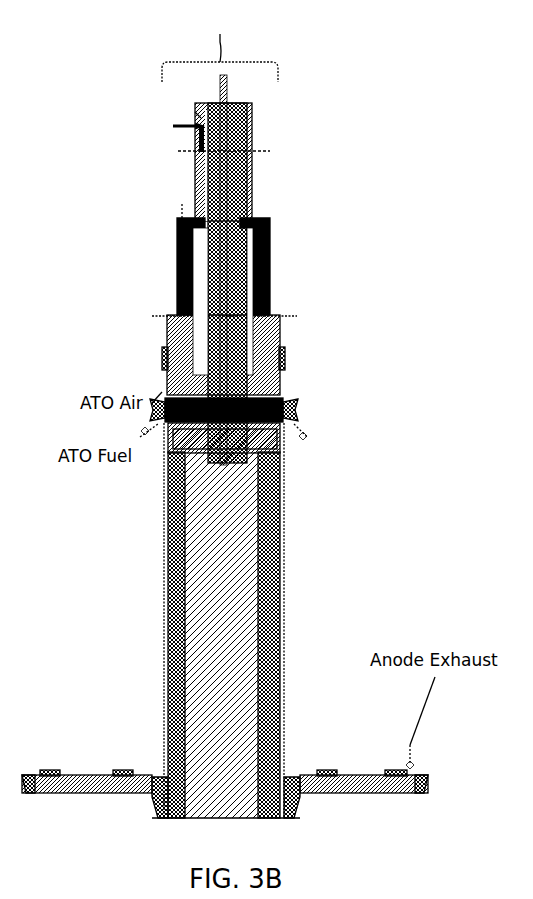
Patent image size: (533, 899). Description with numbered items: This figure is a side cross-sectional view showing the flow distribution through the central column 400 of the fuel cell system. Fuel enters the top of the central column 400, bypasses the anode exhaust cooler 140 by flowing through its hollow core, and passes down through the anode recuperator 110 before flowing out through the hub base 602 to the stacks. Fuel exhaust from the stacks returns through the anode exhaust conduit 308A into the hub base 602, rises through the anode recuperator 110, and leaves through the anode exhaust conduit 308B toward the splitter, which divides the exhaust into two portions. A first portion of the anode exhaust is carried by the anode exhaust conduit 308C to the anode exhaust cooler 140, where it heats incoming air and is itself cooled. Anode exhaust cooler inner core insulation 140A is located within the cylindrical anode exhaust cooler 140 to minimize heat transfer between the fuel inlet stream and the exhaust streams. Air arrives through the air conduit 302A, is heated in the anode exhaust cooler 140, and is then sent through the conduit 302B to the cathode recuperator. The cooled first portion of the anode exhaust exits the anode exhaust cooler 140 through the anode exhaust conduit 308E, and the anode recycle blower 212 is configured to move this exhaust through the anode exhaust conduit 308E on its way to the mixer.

The central column 400 is at (220, 45).
The anode recycle blower 212 is at (168, 128).
The anode exhaust conduit 308E is at (252, 173).
The air conduit 302A is at (166, 206).
The anode exhaust cooler 140 is at (277, 270).
The anode exhaust cooler inner core insulation 140A is at (248, 305).
The conduit 302B is at (177, 303).
The anode exhaust conduit 308C is at (277, 335).
The anode exhaust conduit 308B is at (278, 458).
The anode recuperator 110 is at (283, 538).
The anode exhaust conduit 308A is at (357, 785).
The hub base 602 is at (281, 818).